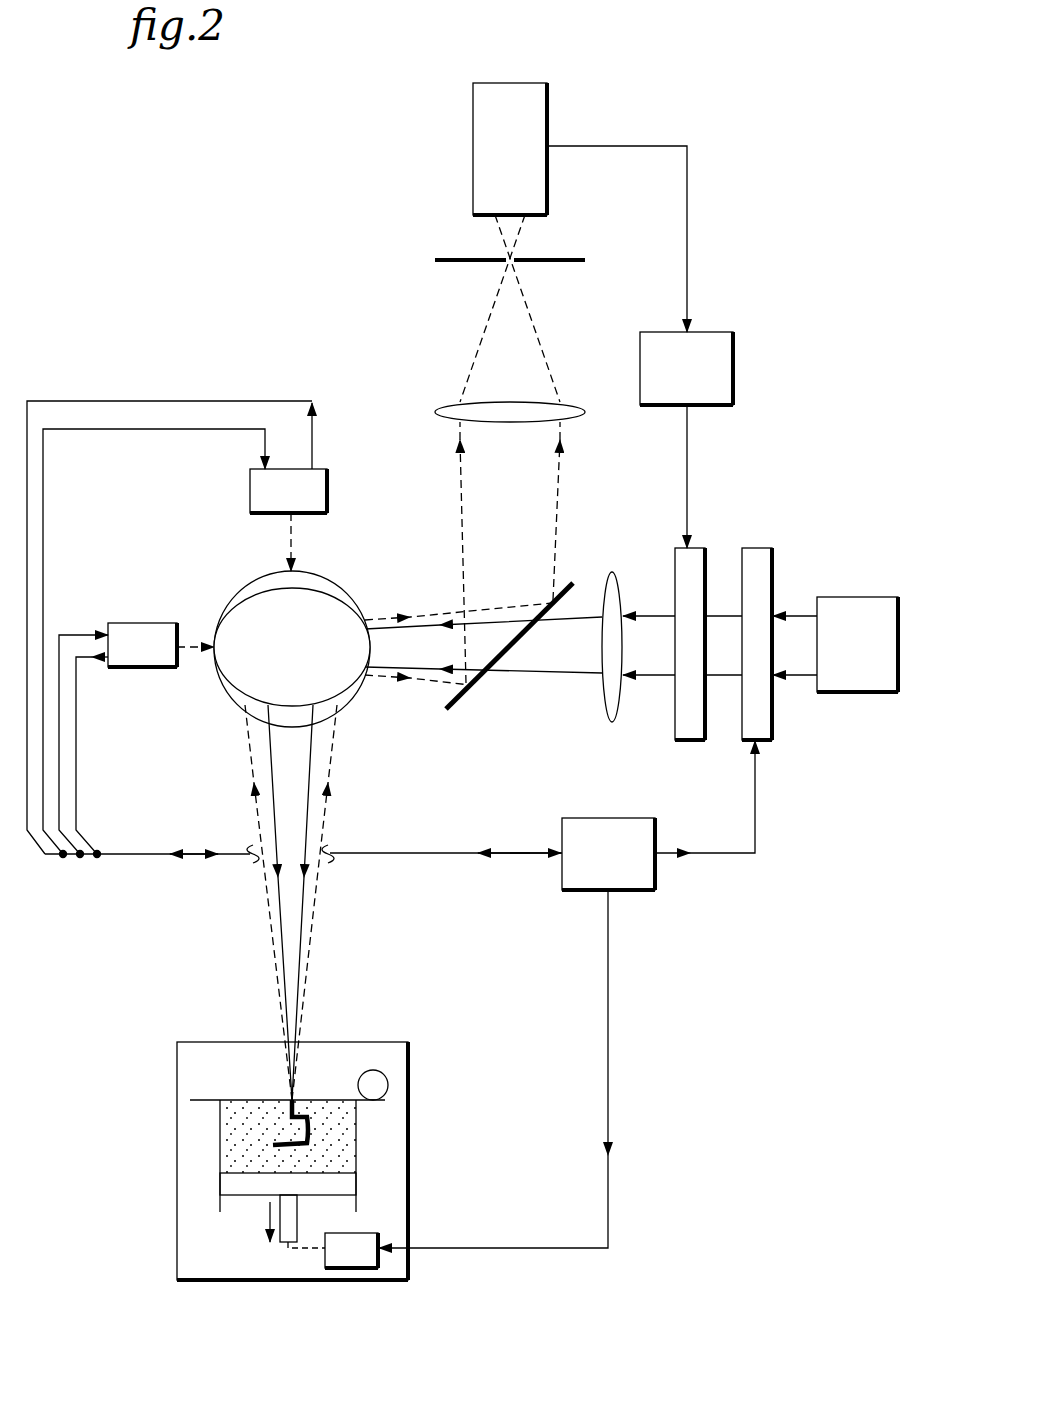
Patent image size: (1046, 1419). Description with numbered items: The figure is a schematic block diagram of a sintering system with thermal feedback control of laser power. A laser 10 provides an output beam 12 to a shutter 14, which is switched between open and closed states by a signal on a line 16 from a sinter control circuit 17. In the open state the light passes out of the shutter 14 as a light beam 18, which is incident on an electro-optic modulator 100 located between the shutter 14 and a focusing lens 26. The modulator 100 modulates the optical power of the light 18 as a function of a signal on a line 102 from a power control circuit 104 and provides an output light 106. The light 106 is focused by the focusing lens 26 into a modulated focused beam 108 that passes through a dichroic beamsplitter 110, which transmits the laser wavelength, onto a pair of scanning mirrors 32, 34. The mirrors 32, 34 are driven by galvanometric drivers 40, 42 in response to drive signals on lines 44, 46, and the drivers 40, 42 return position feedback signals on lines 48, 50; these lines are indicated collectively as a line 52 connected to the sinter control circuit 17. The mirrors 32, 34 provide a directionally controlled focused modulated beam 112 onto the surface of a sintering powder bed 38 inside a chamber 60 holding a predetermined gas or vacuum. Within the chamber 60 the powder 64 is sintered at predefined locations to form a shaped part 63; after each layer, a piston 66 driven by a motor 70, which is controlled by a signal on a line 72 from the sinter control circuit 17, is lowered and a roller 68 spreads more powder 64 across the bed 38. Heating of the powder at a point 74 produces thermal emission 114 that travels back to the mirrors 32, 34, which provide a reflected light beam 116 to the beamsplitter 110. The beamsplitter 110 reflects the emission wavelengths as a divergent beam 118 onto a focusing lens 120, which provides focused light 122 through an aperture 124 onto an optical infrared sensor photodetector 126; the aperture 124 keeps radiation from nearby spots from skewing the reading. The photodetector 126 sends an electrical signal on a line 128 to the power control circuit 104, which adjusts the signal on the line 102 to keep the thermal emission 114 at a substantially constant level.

The laser 10 is at (838, 597).
The output beam 12 is at (798, 628).
The shutter 14 is at (766, 548).
The line 16 is at (755, 818).
The sinter control circuit 17 is at (605, 818).
The light beam 18 is at (728, 662).
The focusing lens 26 is at (605, 702).
The scanning mirror 32 is at (318, 580).
The scanning mirror 34 is at (262, 588).
The sintering powder bed 38 is at (270, 1100).
The galvanometric driver 40 is at (314, 469).
The galvanometric driver 42 is at (128, 623).
The line 44 is at (120, 430).
The line 46 is at (60, 635).
The line 48 is at (118, 401).
The line 50 is at (78, 768).
The line 52 is at (114, 852).
The chamber 60 is at (395, 1190).
The shaped part 63 is at (310, 1143).
The powder 64 is at (228, 1148).
The piston 66 is at (224, 1186).
The roller 68 is at (390, 1085).
The motor 70 is at (348, 1233).
The line 72 is at (610, 1095).
The point 74 is at (296, 1098).
The electro-optic modulator 100 is at (707, 548).
The line 102 is at (690, 435).
The power control circuit 104 is at (662, 332).
The output light 106 is at (647, 662).
The modulated focused beam 108 is at (555, 660).
The dichroic beamsplitter 110 is at (457, 705).
The directionally controlled focused modulated beam 112 is at (287, 841).
The thermal emission 114 is at (307, 965).
The reflected light beam 116 is at (395, 682).
The divergent beam 118 is at (465, 515).
The focusing lens 120 is at (447, 405).
The focused light 122 is at (490, 338).
The aperture 124 is at (444, 260).
The optical infrared sensor photodetector 126 is at (484, 84).
The line 128 is at (606, 146).